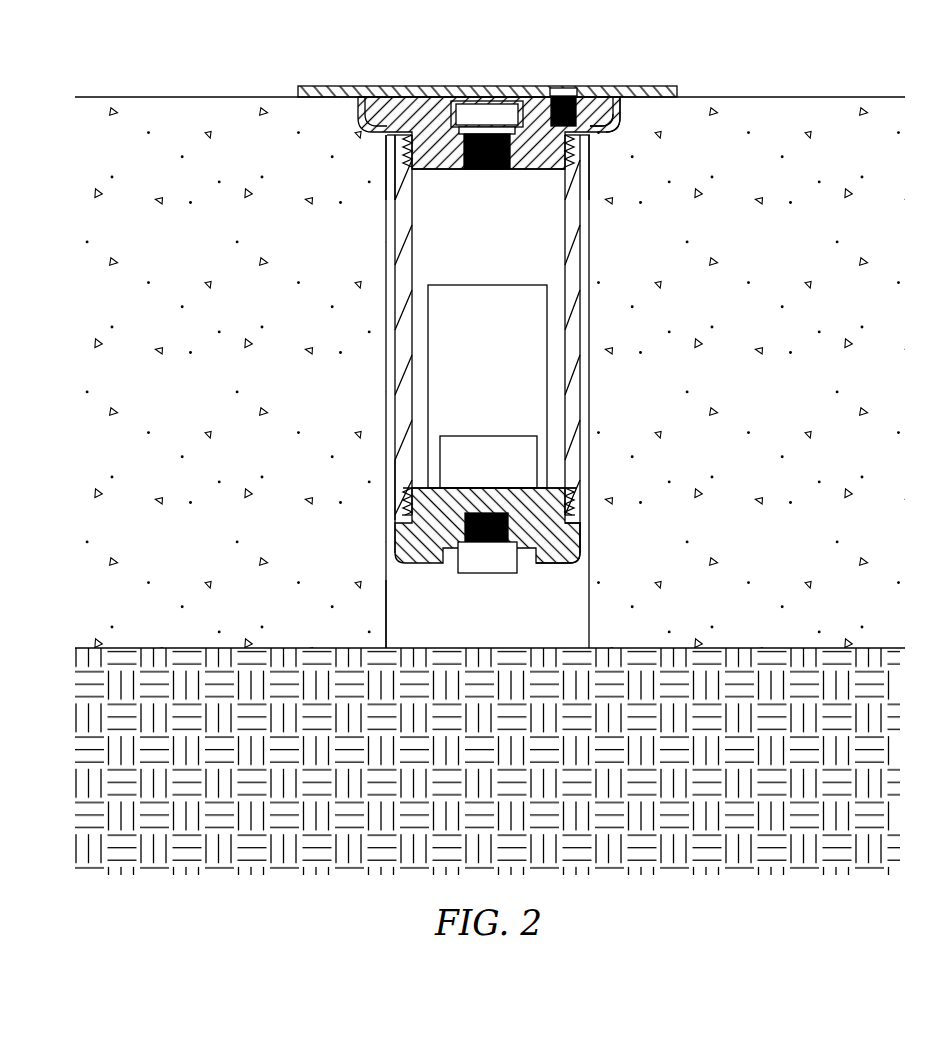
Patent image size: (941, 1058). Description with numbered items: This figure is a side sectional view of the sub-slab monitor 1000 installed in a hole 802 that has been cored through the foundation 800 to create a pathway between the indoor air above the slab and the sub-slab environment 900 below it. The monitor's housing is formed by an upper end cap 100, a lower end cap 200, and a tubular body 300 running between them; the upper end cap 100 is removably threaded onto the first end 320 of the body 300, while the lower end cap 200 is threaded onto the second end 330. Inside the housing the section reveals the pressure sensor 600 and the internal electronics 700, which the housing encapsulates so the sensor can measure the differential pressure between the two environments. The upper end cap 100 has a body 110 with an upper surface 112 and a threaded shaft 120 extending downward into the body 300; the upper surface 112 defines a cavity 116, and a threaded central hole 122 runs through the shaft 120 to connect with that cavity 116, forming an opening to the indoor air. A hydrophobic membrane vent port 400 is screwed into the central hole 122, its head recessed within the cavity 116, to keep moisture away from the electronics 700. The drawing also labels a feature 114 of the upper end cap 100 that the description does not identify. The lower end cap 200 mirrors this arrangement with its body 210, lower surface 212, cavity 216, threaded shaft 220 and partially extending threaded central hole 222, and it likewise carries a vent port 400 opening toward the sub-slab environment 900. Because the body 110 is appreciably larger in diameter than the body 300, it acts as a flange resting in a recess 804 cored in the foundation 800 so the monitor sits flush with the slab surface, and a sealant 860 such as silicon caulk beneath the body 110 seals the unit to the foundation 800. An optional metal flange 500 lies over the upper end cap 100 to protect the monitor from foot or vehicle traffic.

The sub-slab monitor 1000 is at (212, 67).
The upper end cap 100 is at (357, 112).
The body 110 is at (619, 110).
The upper surface 112 is at (585, 97).
The cover lip 114 is at (597, 130).
The cavity 116 is at (521, 100).
The threaded shaft 120 is at (566, 170).
The central hole 122 is at (487, 170).
The lower end cap 200 is at (405, 540).
The body 210 is at (582, 542).
The lower surface 212 is at (537, 564).
The cavity 216 is at (530, 553).
The threaded shaft 220 is at (579, 505).
The central hole 222 is at (570, 488).
The body 300 is at (393, 265).
The first end 320 is at (397, 152).
The second end 330 is at (404, 495).
The hydrophobic membrane vent port 400 is at (452, 100).
The metal flange 500 is at (345, 87).
The pressure sensor 600 is at (507, 475).
The internal electronics 700 is at (507, 366).
The foundation 800 is at (765, 366).
The hole 802 is at (383, 623).
The recess 804 is at (362, 134).
The sealant 860 is at (591, 140).
The sub-slab environment 900 is at (764, 776).